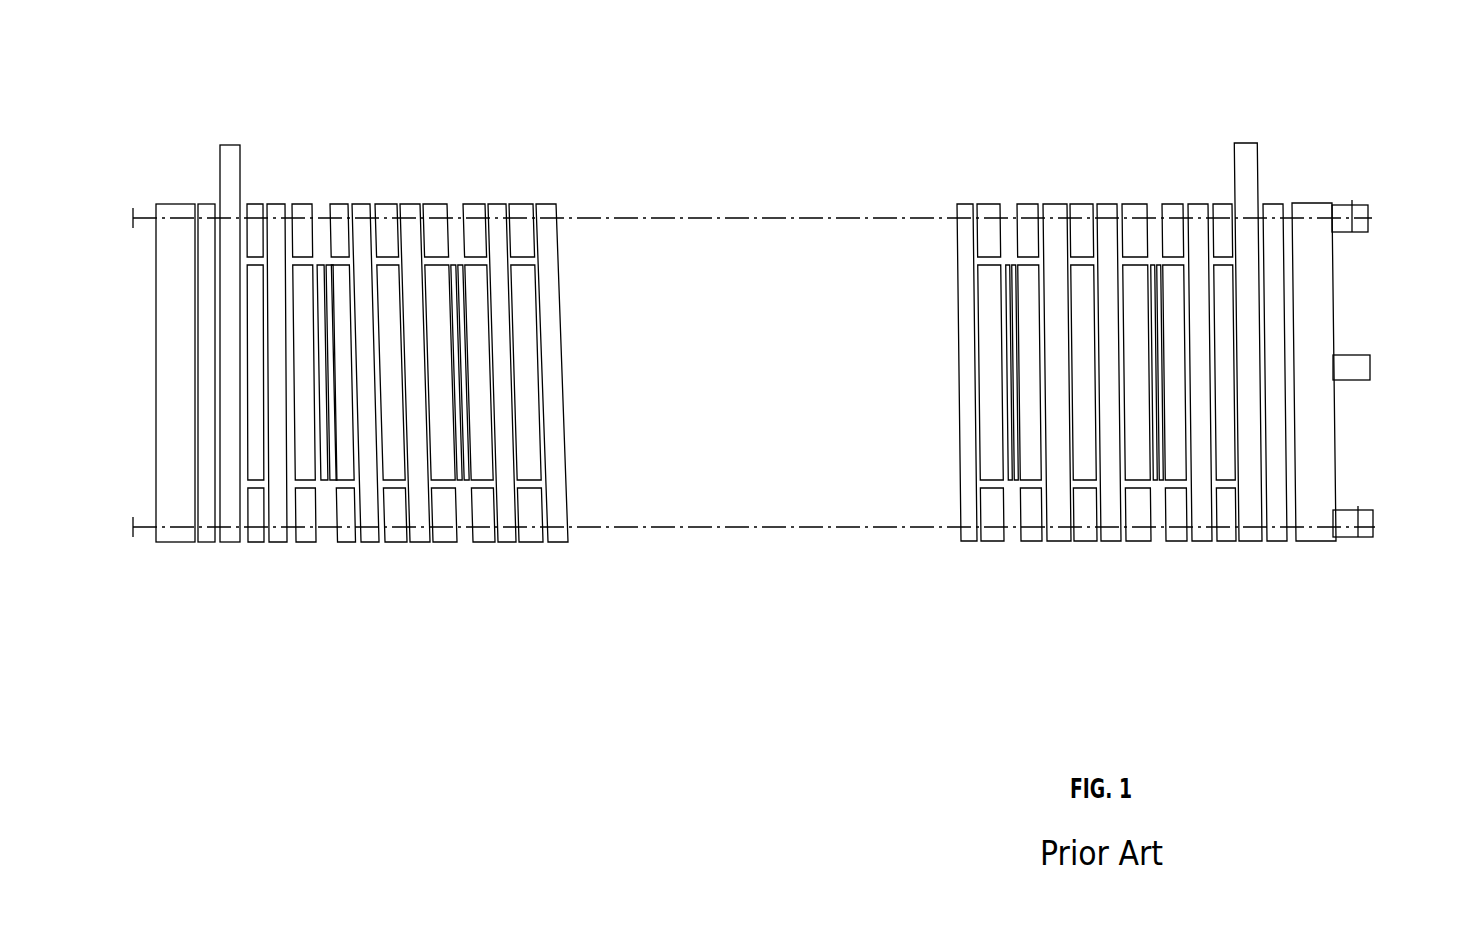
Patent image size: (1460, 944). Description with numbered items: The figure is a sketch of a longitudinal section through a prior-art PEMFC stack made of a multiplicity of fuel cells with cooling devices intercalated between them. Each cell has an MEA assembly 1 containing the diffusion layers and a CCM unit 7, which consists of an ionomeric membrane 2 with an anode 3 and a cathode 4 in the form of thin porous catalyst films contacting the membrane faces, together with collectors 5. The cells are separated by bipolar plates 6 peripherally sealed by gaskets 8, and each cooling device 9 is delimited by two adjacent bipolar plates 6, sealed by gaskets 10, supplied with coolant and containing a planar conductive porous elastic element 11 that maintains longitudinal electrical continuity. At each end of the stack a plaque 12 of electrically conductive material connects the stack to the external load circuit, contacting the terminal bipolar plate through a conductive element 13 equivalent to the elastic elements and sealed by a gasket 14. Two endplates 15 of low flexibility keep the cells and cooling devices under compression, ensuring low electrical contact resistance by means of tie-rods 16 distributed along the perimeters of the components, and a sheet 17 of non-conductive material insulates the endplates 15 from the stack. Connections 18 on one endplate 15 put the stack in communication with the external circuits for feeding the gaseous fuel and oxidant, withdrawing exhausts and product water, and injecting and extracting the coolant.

The MEA assembly 1 is at (318, 182).
The ionomeric membrane 2 is at (224, 292).
The anode 3 is at (322, 330).
The cathode 4 is at (313, 362).
The collector 5 is at (300, 305).
The bipolar plate 6 is at (277, 247).
The CCM unit 7 is at (372, 548).
The gasket 8 is at (303, 210).
The cooling device 9 is at (423, 548).
The gasket 10 is at (385, 212).
The planar conductive porous elastic element 11 is at (390, 290).
The plaque 12 is at (232, 172).
The conductive element 13 is at (252, 486).
The gasket 14 is at (262, 475).
The endplate 15 is at (181, 535).
The tie-rod 16 is at (612, 528).
The sheet of non conductive material 17 is at (205, 212).
The connection 18 is at (1360, 220).